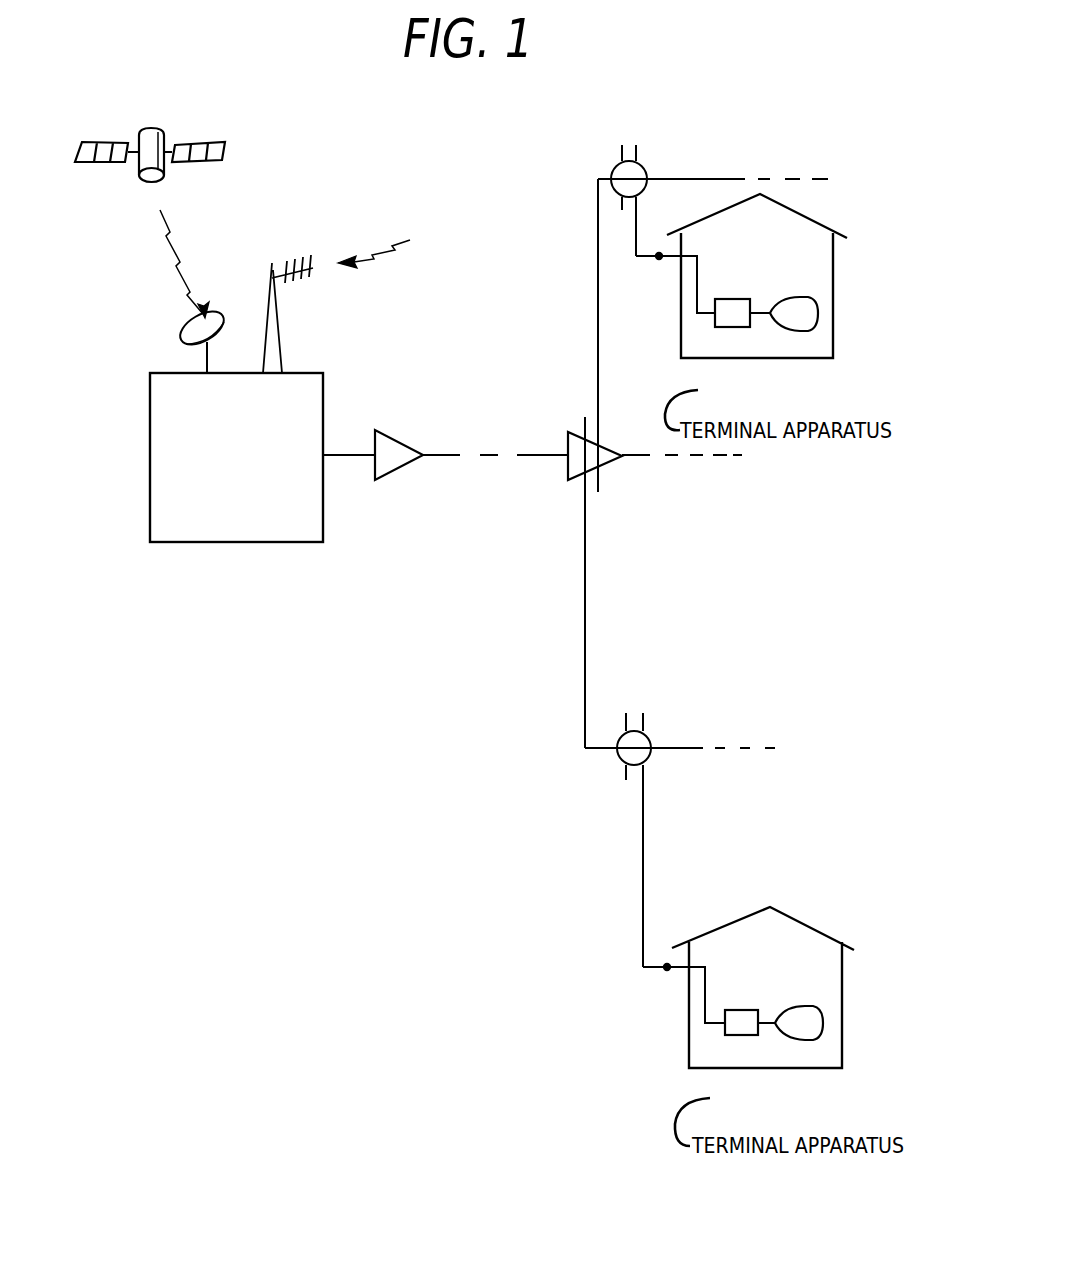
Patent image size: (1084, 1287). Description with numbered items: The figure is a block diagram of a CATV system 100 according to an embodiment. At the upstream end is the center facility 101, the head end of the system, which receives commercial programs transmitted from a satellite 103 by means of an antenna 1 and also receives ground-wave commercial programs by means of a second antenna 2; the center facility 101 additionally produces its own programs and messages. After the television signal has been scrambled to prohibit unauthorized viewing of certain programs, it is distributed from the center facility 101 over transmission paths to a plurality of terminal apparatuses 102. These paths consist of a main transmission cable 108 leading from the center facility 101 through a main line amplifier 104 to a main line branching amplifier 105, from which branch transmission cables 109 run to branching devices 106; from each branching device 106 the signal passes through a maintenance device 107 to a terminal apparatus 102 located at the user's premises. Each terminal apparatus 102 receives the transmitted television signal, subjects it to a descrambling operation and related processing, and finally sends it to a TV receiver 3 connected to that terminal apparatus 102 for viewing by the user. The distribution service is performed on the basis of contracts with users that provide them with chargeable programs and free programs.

The antenna 1 is at (180, 334).
The antenna 2 is at (307, 285).
The TV receiver 3 is at (800, 332).
The CATV system 100 is at (298, 888).
The center facility 101 is at (200, 542).
The terminal apparatus 102 is at (728, 327).
The satellite 103 is at (228, 150).
The main line amplifier 104 is at (398, 470).
The main line branching amplifier 105 is at (568, 430).
The branching device 106 is at (643, 168).
The maintenance device 107 is at (657, 260).
The main transmission cable 108 is at (356, 455).
The branch transmission cable 109 is at (598, 215).